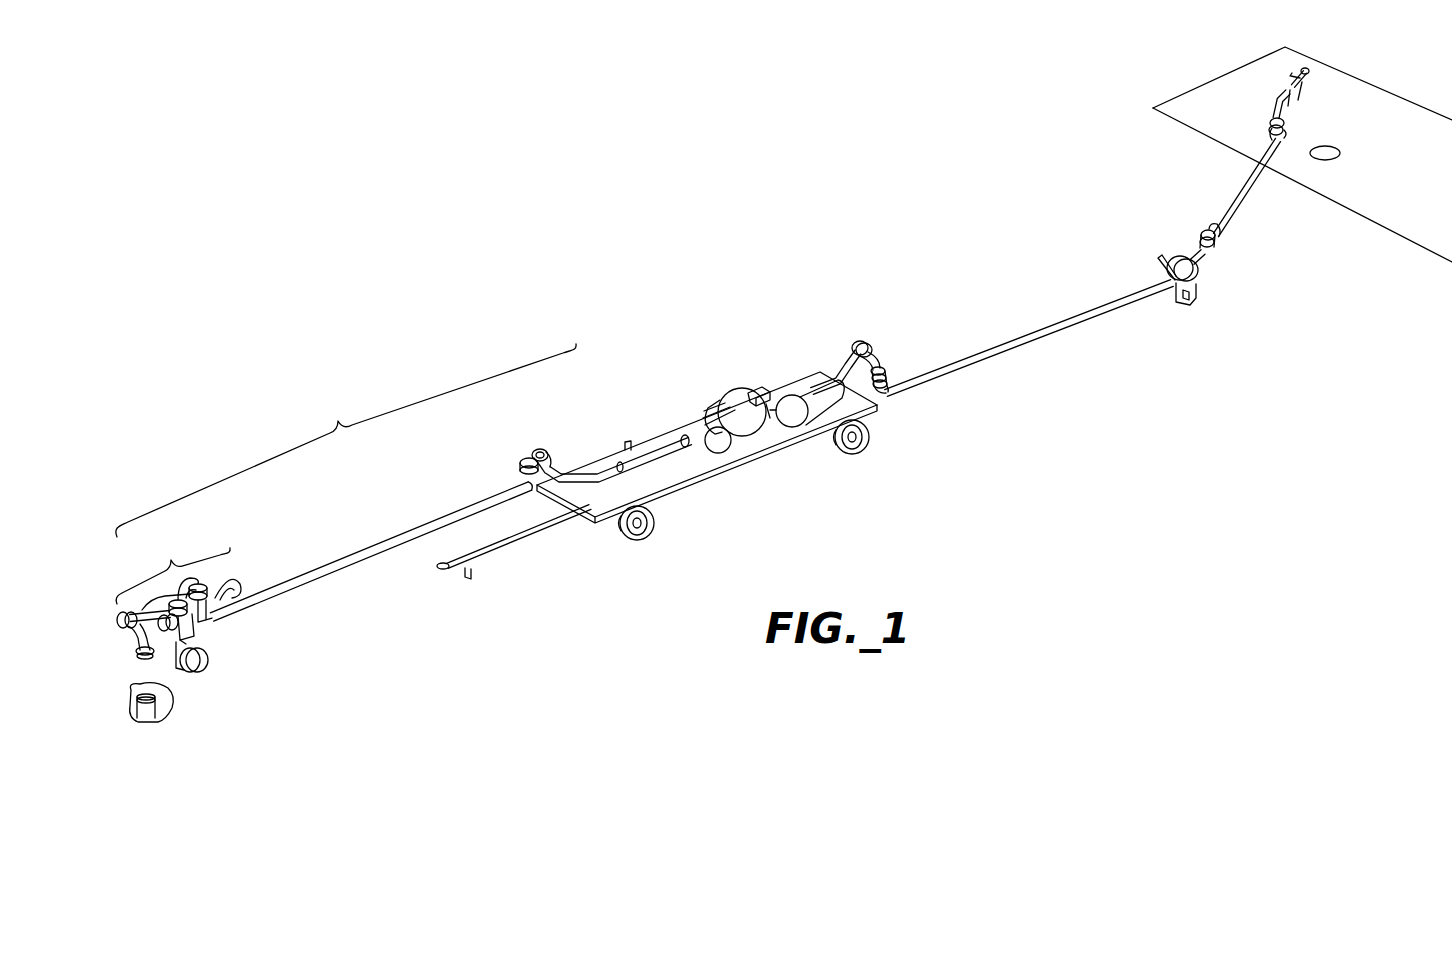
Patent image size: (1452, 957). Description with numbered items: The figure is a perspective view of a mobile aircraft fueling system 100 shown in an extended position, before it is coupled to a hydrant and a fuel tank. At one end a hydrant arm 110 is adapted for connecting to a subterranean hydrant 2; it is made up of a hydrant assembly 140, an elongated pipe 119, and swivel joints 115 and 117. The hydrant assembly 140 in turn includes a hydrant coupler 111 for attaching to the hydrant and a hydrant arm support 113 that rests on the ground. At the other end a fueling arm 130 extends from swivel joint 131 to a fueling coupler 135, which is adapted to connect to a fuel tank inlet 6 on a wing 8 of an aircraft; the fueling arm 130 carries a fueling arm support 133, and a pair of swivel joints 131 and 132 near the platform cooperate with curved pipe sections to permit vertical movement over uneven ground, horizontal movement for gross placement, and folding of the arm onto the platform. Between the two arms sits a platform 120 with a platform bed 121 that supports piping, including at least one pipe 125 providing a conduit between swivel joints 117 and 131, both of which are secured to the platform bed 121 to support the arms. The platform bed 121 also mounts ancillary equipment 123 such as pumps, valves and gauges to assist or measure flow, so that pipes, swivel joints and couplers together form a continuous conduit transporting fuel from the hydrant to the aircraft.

The fueling system 100 is at (298, 232).
The hydrant arm 110 is at (346, 440).
The hydrant coupler 111 is at (150, 652).
The hydrant arm support 113 is at (210, 638).
The swivel joint 115 is at (522, 462).
The swivel joint 117 is at (549, 458).
The elongated pipe 119 is at (362, 540).
The platform 120 is at (697, 318).
The platform bed 121 is at (762, 474).
The ancillary equipment 123 is at (729, 391).
The pipe 125 is at (810, 380).
The fueling arm 130 is at (1010, 246).
The swivel joint 131 is at (858, 346).
The swivel joint 132 is at (896, 370).
The fueling arm support 133 is at (1185, 306).
The fueling coupler 135 is at (1290, 86).
The hydrant assembly 140 is at (178, 585).
The wing 8 is at (1221, 128).
The fuel tank inlet 6 is at (1330, 161).
The subterranean hydrant 2 is at (163, 716).